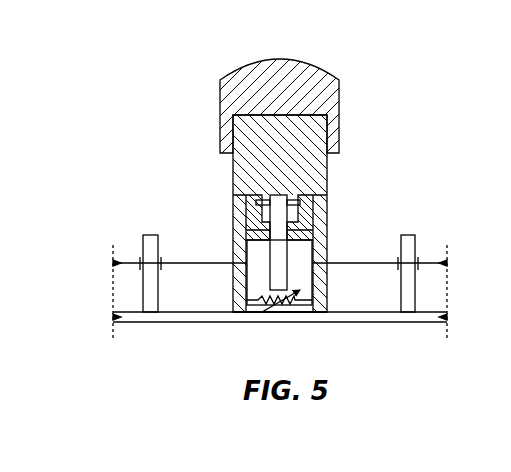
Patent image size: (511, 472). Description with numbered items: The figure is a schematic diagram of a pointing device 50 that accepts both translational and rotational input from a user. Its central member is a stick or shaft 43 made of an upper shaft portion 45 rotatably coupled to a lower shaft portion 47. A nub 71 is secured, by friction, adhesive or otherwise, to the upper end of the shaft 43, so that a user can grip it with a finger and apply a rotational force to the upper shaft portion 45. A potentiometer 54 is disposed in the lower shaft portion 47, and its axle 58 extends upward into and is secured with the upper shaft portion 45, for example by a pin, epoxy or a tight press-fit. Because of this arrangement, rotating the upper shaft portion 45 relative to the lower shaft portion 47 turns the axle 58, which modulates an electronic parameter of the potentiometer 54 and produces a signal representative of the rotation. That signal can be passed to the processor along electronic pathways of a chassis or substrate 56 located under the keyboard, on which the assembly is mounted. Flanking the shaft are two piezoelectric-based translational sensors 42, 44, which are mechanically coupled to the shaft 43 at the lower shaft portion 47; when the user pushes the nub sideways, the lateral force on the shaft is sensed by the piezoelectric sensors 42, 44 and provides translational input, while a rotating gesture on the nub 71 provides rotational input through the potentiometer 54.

The pointing device 50 is at (409, 86).
The nub 71 is at (278, 59).
The shaft 43 is at (352, 183).
The upper shaft portion 45 is at (233, 182).
The lower shaft portion 47 is at (233, 228).
The axle 58 is at (270, 267).
The potentiometer 54 is at (305, 268).
The piezoelectric sensor 42 is at (150, 235).
The piezoelectric sensor 44 is at (410, 235).
The substrate 56 is at (290, 322).